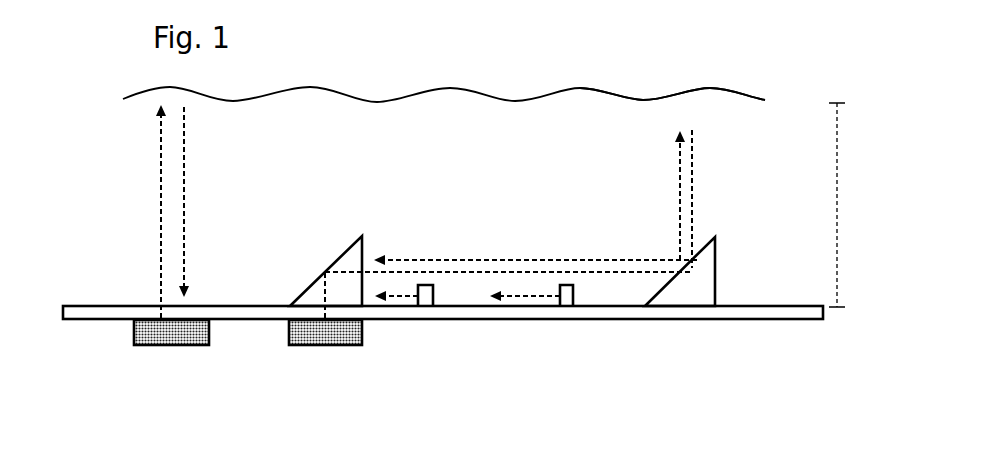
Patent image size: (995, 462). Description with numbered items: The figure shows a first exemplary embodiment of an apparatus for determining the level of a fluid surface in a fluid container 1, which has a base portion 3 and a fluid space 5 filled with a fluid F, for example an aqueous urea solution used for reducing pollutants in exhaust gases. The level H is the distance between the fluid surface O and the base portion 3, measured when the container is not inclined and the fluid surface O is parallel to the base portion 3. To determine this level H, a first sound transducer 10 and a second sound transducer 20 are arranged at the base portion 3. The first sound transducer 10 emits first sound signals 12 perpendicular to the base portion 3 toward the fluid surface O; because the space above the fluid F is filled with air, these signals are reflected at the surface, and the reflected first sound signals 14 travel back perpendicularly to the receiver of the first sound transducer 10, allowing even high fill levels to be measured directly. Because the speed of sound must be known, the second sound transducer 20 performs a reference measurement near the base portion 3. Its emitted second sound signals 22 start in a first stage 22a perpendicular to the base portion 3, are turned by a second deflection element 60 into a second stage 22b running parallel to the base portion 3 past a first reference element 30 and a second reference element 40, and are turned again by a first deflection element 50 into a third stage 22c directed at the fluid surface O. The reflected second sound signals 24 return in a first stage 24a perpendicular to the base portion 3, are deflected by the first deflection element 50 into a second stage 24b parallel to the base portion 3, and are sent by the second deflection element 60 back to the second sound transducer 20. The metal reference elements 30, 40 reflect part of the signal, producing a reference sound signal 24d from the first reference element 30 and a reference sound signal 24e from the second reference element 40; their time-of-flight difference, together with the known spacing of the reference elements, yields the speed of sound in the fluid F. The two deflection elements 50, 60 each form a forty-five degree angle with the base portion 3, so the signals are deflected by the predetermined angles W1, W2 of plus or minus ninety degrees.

The fluid container 1 is at (94, 127).
The base portion 3 is at (787, 322).
The fluid space 5 is at (328, 73).
The fluid surface O is at (700, 89).
The fluid F is at (278, 165).
The level H is at (836, 212).
The first sound transducer 10 is at (148, 343).
The first sound signals 12 is at (161, 212).
The reflected first sound signals 14 is at (184, 160).
The second sound transducer 20 is at (298, 343).
The emitted second sound signals 22 is at (377, 242).
The first stage of the emitted second sound signals 22a is at (325, 284).
The second stage of the emitted second sound signals 22b is at (510, 271).
The third stage of the emitted second sound signals 22c is at (679, 170).
The reflected second sound signals 24 is at (405, 232).
The first stage of the reflected second sound signals 24a is at (692, 220).
The second stage of the reflected second sound signals 24b is at (577, 260).
The reference sound signal reflected by the first reference element 24d is at (392, 297).
The reference sound signal reflected by the second reference element 24e is at (510, 297).
The first reference element 30 is at (433, 297).
The second reference element 40 is at (575, 297).
The first deflection element 50 is at (716, 260).
The second deflection element 60 is at (348, 250).
The predetermined angle W1 is at (668, 260).
The predetermined angle W2 is at (347, 273).